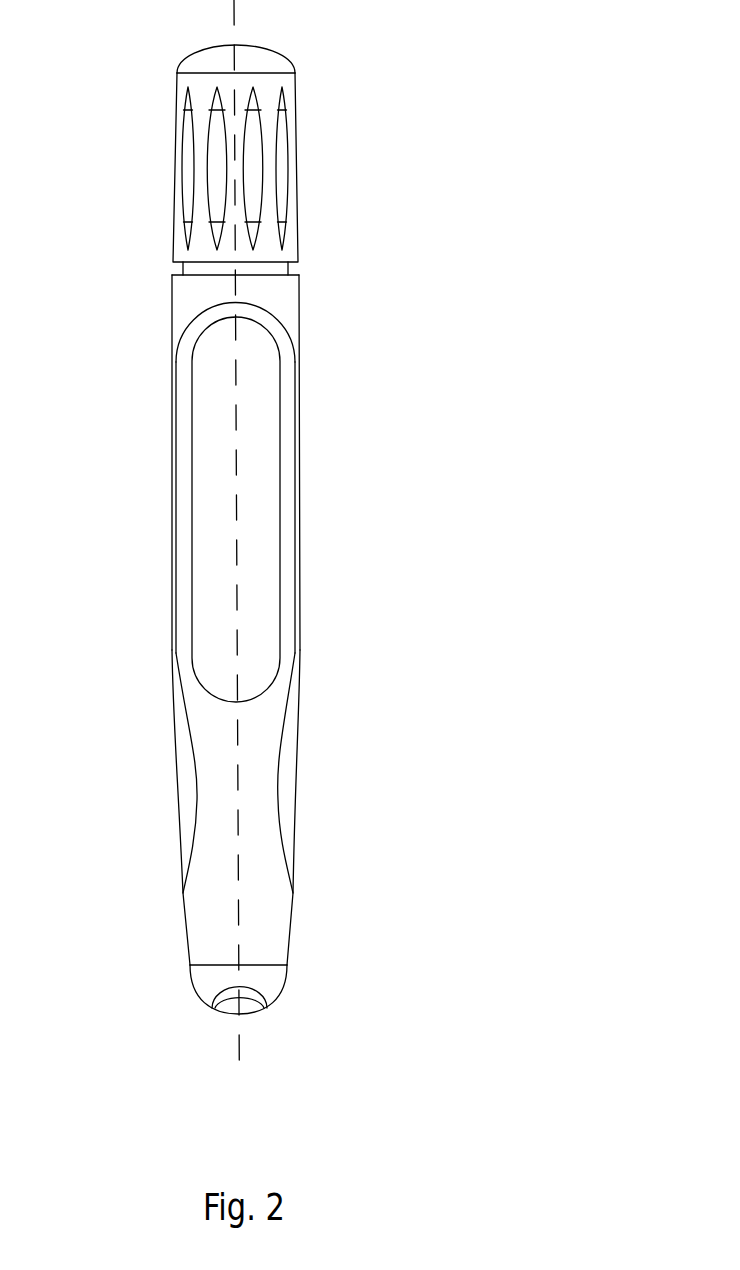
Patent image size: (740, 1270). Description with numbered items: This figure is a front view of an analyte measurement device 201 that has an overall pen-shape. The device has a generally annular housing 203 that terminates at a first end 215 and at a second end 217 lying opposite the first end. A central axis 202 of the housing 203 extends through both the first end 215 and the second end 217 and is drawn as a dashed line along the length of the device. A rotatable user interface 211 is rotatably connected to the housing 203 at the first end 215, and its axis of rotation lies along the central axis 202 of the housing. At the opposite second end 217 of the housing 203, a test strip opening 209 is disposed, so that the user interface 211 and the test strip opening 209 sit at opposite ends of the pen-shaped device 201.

The analyte measurement device 201 is at (552, 92).
The central axis 202 is at (330, 546).
The housing 203 is at (253, 847).
The test strip opening 209 is at (212, 1008).
The rotatable user interface 211 is at (278, 165).
The first end 215 is at (308, 290).
The second end 217 is at (288, 979).